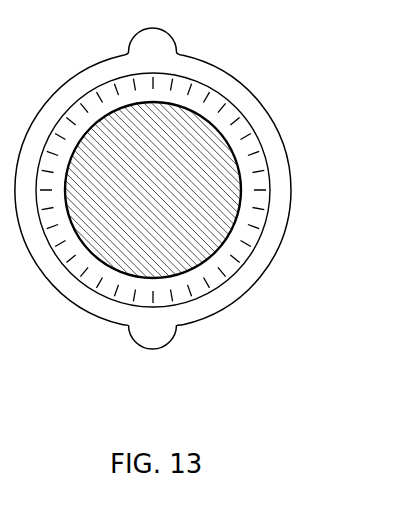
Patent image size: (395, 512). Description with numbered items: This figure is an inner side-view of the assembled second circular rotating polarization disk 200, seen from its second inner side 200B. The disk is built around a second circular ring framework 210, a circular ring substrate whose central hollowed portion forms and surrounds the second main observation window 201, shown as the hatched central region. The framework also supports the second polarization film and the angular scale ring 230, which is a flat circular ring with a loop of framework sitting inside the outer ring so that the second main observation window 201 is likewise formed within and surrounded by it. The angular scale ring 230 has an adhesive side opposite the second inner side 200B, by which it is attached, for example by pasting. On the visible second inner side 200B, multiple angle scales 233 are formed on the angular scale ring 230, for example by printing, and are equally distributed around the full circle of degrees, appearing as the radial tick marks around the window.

The second circular rotating polarization disk 200 is at (168, 391).
The second inner side 200B is at (205, 312).
The second main observation window 201 is at (180, 82).
The second circular ring framework 210 is at (243, 290).
The angular scale ring 230 is at (270, 157).
The angle scales 233 is at (247, 107).